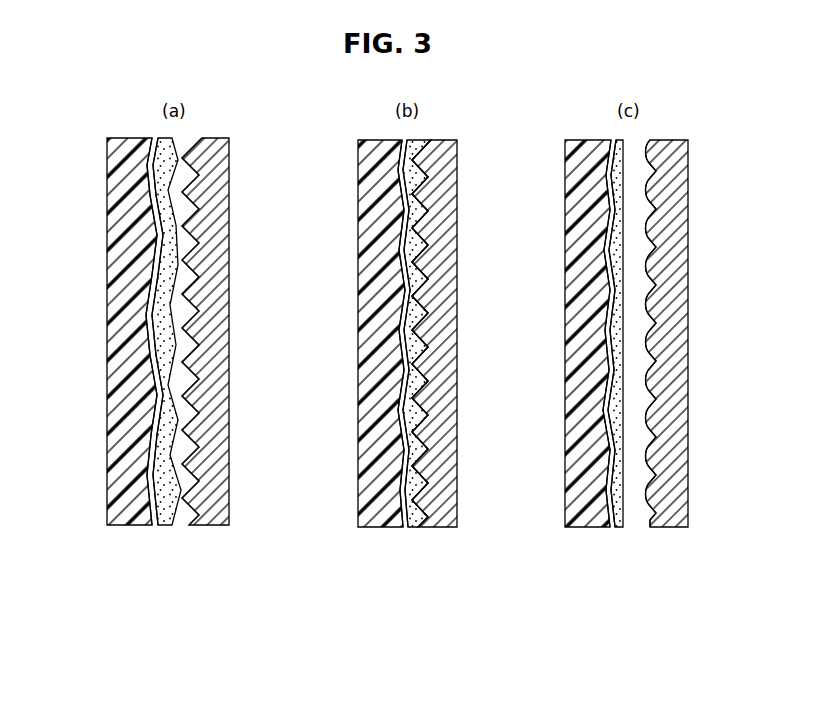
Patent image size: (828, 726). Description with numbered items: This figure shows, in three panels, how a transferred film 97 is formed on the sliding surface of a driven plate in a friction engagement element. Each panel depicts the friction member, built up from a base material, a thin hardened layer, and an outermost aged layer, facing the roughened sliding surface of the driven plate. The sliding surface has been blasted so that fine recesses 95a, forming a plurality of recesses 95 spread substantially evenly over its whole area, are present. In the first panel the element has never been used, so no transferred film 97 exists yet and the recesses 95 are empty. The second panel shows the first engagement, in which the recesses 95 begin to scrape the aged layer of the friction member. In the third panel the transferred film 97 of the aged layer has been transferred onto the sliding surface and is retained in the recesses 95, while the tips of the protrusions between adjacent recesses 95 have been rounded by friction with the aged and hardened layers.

The recesses 95 is at (190, 175).
The fine recesses 95a is at (124, 122).
The transferred film 97 is at (641, 497).